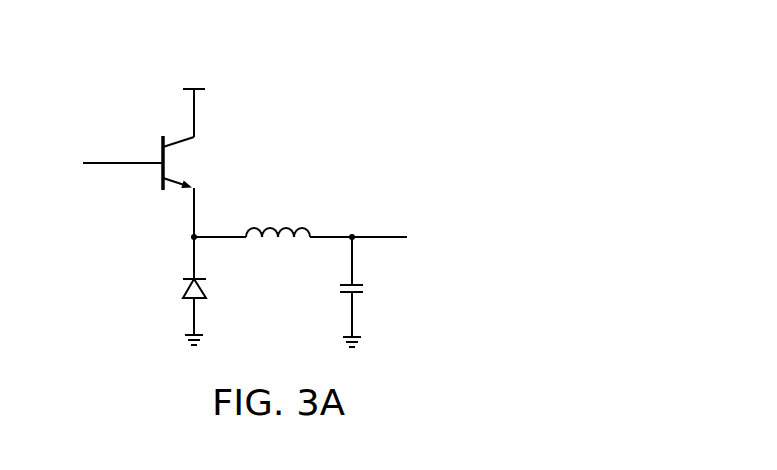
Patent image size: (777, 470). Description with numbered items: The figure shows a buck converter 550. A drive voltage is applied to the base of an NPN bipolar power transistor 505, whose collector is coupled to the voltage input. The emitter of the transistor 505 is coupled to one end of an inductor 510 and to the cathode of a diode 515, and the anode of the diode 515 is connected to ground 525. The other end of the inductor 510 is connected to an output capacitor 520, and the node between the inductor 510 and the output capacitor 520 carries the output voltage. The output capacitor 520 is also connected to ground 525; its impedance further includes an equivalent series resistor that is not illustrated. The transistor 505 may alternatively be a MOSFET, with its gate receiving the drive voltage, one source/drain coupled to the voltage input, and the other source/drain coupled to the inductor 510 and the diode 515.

The NPN bipolar power transistor 505 is at (161, 150).
The inductor 510 is at (287, 217).
The diode 515 is at (183, 288).
The output capacitor 520 is at (340, 290).
The ground 525 is at (187, 343).
The buck converter 550 is at (344, 138).